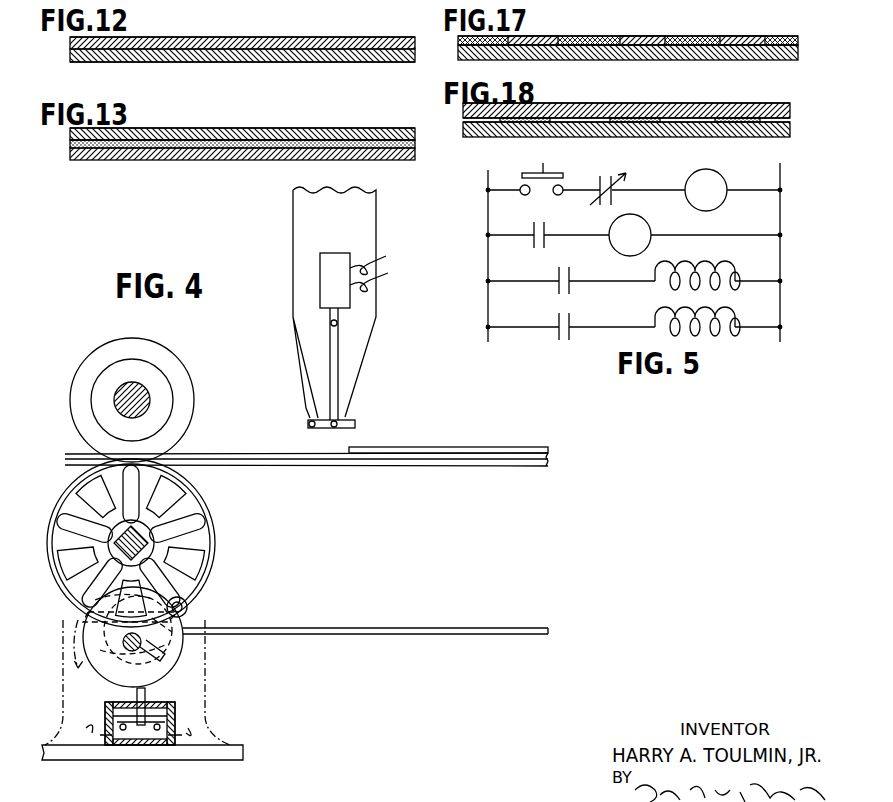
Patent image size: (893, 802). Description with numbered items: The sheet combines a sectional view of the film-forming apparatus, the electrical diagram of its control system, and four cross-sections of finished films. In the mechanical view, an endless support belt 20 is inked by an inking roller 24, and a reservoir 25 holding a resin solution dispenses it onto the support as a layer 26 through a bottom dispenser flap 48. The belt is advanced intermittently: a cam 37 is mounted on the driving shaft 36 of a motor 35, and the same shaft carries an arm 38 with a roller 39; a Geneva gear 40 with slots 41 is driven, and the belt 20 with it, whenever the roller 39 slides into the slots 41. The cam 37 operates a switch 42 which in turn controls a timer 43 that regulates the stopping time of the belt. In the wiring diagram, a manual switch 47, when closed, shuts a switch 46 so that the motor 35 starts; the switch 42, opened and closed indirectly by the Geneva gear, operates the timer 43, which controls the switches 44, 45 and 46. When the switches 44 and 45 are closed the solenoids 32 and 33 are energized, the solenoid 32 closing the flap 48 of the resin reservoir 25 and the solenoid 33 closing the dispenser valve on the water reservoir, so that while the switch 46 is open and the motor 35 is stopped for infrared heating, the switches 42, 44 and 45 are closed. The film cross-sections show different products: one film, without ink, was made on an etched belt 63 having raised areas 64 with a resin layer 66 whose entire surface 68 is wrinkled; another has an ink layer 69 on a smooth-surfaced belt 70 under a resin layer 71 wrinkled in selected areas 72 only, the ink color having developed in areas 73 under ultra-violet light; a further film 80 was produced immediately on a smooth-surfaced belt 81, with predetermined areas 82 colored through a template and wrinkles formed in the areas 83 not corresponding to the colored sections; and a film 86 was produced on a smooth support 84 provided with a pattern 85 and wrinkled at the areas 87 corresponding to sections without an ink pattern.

In FIG. 4, the endless support belt 20 is at (347, 628).
In FIG. 4, the inking roller 24 is at (178, 398).
In FIG. 4, the reservoir 25 is at (303, 282).
In FIG. 4, the layer 26 is at (472, 452).
In FIG. 5, the solenoid 32 is at (682, 268).
In FIG. 4, the solenoid 32 is at (333, 260).
In FIG. 5, the solenoid 33 is at (714, 322).
In FIG. 5, the motor 35 is at (716, 183).
In FIG. 4, the motor 35 is at (205, 693).
In FIG. 4, the driving shaft 36 is at (170, 652).
In FIG. 4, the cam 37 is at (170, 667).
In FIG. 4, the arm 38 is at (187, 622).
In FIG. 4, the roller 39 is at (187, 607).
In FIG. 4, the Geneva gear 40 is at (193, 550).
In FIG. 4, the slots 41 is at (137, 493).
In FIG. 5, the switch 42 is at (546, 231).
In FIG. 4, the switch 42 is at (175, 717).
In FIG. 5, the timer 43 is at (640, 232).
In FIG. 5, the switch 44 is at (570, 276).
In FIG. 5, the switch 45 is at (572, 322).
In FIG. 5, the switch 46 is at (622, 178).
In FIG. 5, the manual switch 47 is at (548, 173).
In FIG. 4, the bottom dispenser flap 48 is at (356, 425).
In FIG. 12, the etched belt 63 is at (184, 55).
In FIG. 12, the raised areas 64 is at (298, 52).
In FIG. 12, the resin layer 66 is at (236, 42).
In FIG. 12, the surface 68 is at (304, 38).
In FIG. 13, the ink layer 69 is at (207, 143).
In FIG. 13, the smooth-surfaced belt 70 is at (198, 156).
In FIG. 13, the resin layer 71 is at (312, 132).
In FIG. 13, the selected areas 72 is at (146, 129).
In FIG. 13, the areas 73 is at (148, 148).
In FIG. 17, the film 80 is at (781, 36).
In FIG. 17, the smooth-surfaced belt 81 is at (741, 50).
In FIG. 17, the predetermined areas 82 is at (681, 34).
In FIG. 17, the areas 83 is at (626, 34).
In FIG. 18, the smooth support 84 is at (500, 131).
In FIG. 18, the pattern 85 is at (740, 125).
In FIG. 18, the film 86 is at (729, 108).
In FIG. 18, the areas 87 is at (686, 106).